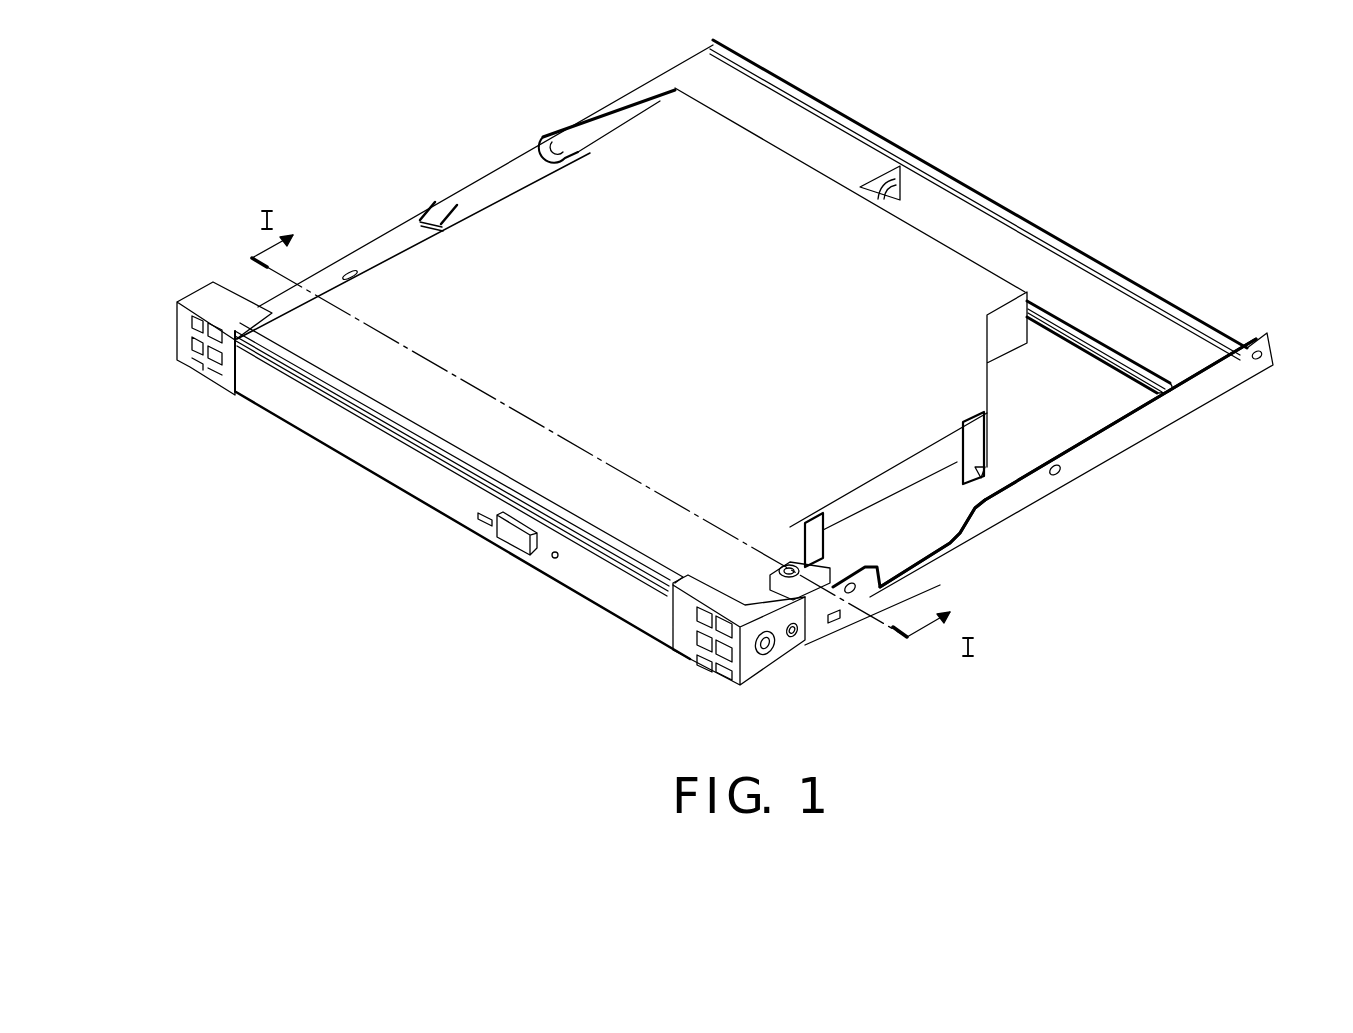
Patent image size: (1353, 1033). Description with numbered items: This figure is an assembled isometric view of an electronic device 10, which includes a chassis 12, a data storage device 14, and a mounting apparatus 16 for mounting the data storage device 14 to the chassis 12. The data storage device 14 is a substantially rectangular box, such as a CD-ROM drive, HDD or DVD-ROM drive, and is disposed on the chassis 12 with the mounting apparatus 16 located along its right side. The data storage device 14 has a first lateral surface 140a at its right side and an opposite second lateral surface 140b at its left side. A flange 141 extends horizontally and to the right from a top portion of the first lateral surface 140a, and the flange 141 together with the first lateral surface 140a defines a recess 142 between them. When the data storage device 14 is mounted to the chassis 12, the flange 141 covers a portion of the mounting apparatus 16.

The electronic device 10 is at (725, 362).
The chassis 12 is at (755, 342).
The data storage device 14 is at (905, 285).
The mounting apparatus 16 is at (823, 547).
The first lateral surface 140a is at (1010, 340).
The second lateral surface 140b is at (490, 193).
The flange 141 is at (920, 463).
The recess 142 is at (905, 495).